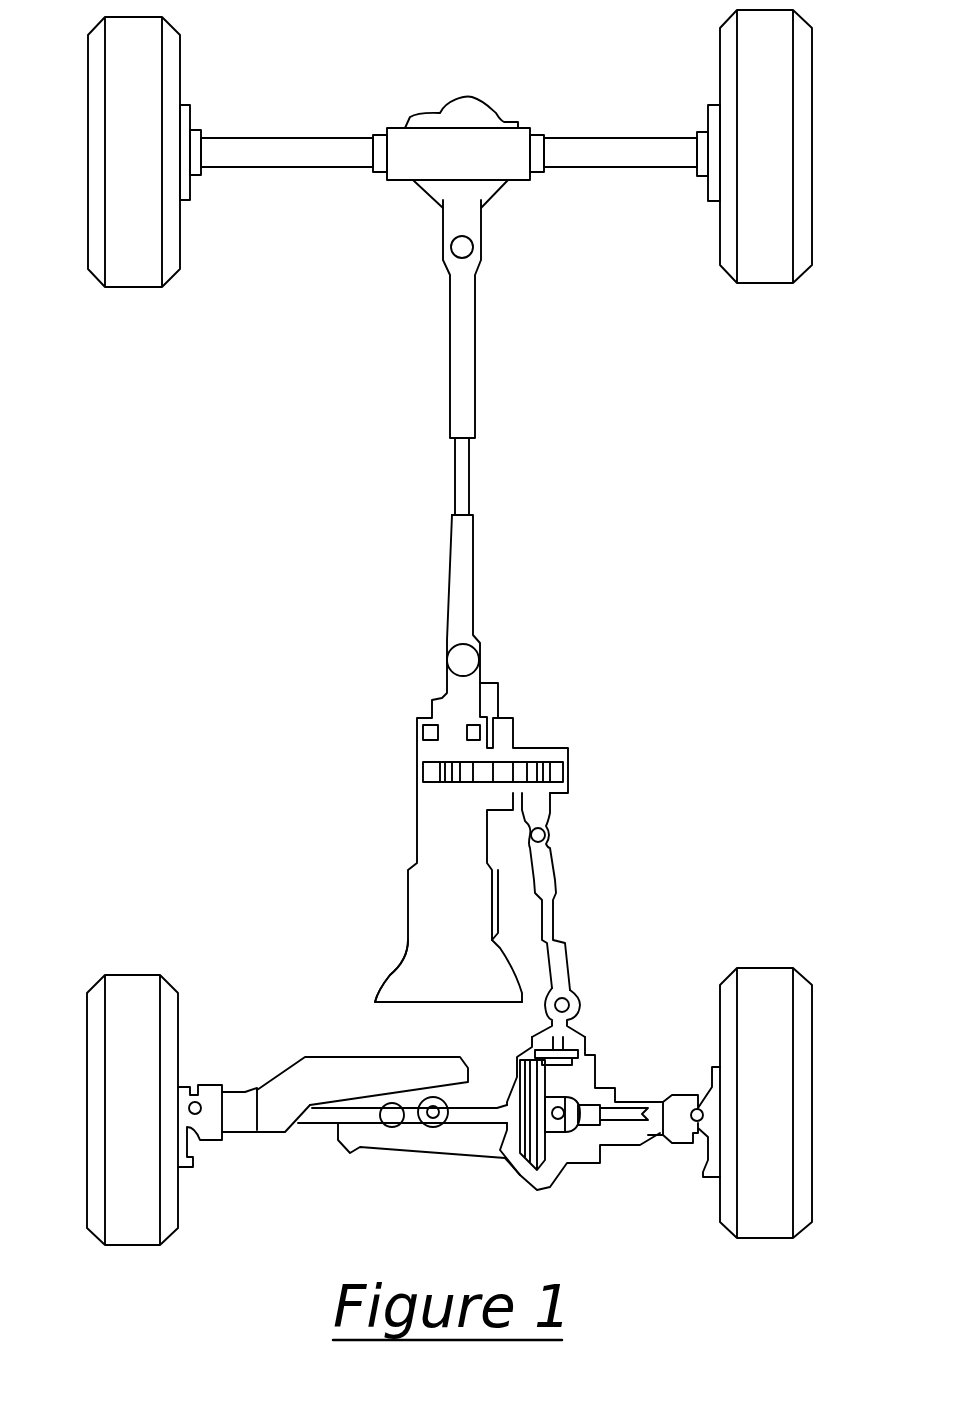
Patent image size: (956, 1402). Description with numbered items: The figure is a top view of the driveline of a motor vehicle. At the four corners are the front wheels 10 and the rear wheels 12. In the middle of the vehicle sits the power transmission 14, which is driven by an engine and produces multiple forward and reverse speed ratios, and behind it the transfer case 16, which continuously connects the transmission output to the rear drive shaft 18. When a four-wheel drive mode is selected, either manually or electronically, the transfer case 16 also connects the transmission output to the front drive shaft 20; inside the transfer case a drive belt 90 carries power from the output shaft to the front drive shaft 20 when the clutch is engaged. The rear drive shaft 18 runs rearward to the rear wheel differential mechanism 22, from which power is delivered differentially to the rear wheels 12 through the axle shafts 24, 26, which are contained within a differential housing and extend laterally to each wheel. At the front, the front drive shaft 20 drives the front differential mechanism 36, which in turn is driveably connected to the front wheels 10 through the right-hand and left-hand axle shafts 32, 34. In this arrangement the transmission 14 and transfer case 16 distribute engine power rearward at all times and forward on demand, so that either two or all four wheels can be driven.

The front wheels 10 is at (127, 985).
The rear wheels 12 is at (133, 262).
The power transmission 14 is at (398, 977).
The transfer case 16 is at (432, 847).
The rear drive shaft 18 is at (462, 392).
The front drive shaft 20 is at (558, 972).
The rear wheel differential mechanism 22 is at (427, 147).
The axle shaft 24 is at (308, 152).
The axle shaft 26 is at (645, 152).
The right-hand axle shaft 32 is at (318, 1113).
The left-hand axle shaft 34 is at (615, 1113).
The front differential mechanism 36 is at (523, 1167).
The drive belt 90 is at (502, 775).